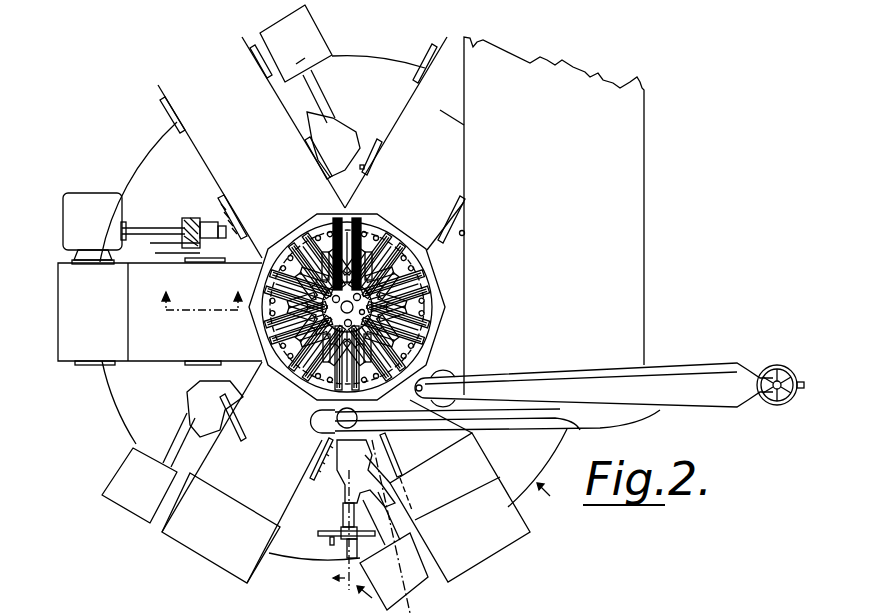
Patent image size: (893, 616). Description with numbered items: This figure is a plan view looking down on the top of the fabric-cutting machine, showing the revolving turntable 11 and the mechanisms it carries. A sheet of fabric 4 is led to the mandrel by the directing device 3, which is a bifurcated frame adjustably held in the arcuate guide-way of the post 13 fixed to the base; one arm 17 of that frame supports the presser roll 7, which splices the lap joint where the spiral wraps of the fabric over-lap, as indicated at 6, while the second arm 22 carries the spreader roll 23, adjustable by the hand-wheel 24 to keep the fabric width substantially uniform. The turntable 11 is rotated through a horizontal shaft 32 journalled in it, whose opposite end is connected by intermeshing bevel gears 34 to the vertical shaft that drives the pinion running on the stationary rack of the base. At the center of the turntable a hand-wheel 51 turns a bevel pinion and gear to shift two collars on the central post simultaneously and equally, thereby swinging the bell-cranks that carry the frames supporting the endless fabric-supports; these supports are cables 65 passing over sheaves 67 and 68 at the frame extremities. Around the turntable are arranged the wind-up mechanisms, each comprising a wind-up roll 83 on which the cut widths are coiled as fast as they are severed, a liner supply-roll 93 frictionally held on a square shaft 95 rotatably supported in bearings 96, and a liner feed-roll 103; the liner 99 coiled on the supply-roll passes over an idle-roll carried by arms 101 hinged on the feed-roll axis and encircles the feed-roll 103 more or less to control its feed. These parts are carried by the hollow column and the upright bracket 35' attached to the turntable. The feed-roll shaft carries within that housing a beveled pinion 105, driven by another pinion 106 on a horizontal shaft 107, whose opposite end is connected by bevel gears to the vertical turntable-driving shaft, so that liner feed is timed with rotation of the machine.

The fabric directing device 3 is at (452, 548).
The sheet of fabric 4 is at (635, 217).
The overlap of spiral wraps 6 is at (329, 578).
The presser roll 7 is at (372, 432).
The turntable 11 is at (110, 386).
The post 13 is at (201, 291).
The arm of bifurcated frame 17 is at (453, 427).
The second arm of frame 22 is at (674, 372).
The spreader roll 23 is at (446, 370).
The hand-wheel 24 is at (775, 362).
The horizontal shaft 32 is at (405, 512).
The bevel gears 34 is at (423, 585).
The upright bracket 35' is at (207, 354).
The hand-wheel 51 is at (320, 532).
The endless cables 65 is at (347, 212).
The sheave 67 is at (358, 219).
The sheave 68 is at (334, 219).
The wind-up roll 83 is at (523, 530).
The liner supply-roll 93 is at (773, 609).
The square shaft 95 is at (641, 609).
The bearings 96 is at (597, 609).
The liner 99 is at (710, 615).
The arms 101 is at (370, 165).
The liner feed-roll 103 is at (372, 150).
The beveled pinion 105 is at (233, 239).
The pinion 106 is at (204, 217).
The horizontal shaft 107 is at (317, 100).